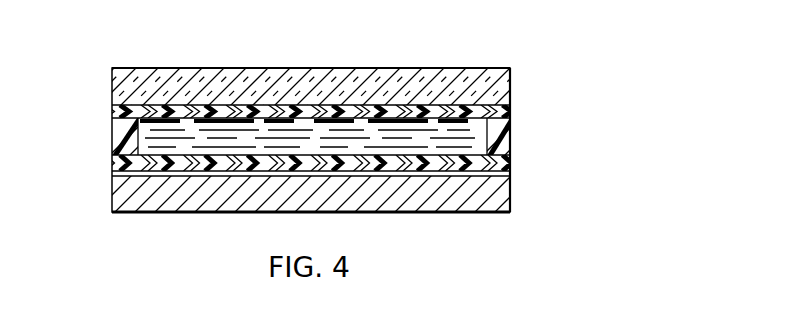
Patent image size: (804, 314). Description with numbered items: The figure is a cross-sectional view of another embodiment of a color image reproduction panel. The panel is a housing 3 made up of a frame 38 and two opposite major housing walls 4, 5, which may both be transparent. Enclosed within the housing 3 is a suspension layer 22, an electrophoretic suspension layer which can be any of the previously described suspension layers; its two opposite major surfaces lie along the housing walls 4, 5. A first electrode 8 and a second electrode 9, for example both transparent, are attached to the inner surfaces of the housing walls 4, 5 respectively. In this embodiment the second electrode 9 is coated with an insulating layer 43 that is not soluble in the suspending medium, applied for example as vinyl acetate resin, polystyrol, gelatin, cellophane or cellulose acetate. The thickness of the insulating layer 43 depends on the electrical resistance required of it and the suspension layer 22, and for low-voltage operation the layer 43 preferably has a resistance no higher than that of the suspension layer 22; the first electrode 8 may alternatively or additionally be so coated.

The housing 3 is at (108, 67).
The major housing wall 4 is at (113, 85).
The first electrode 8 is at (113, 110).
The frame 38 is at (118, 132).
The suspension layer 22 is at (186, 145).
The insulating layer 43 is at (243, 156).
The second electrode 9 is at (113, 176).
The major housing wall 5 is at (113, 198).